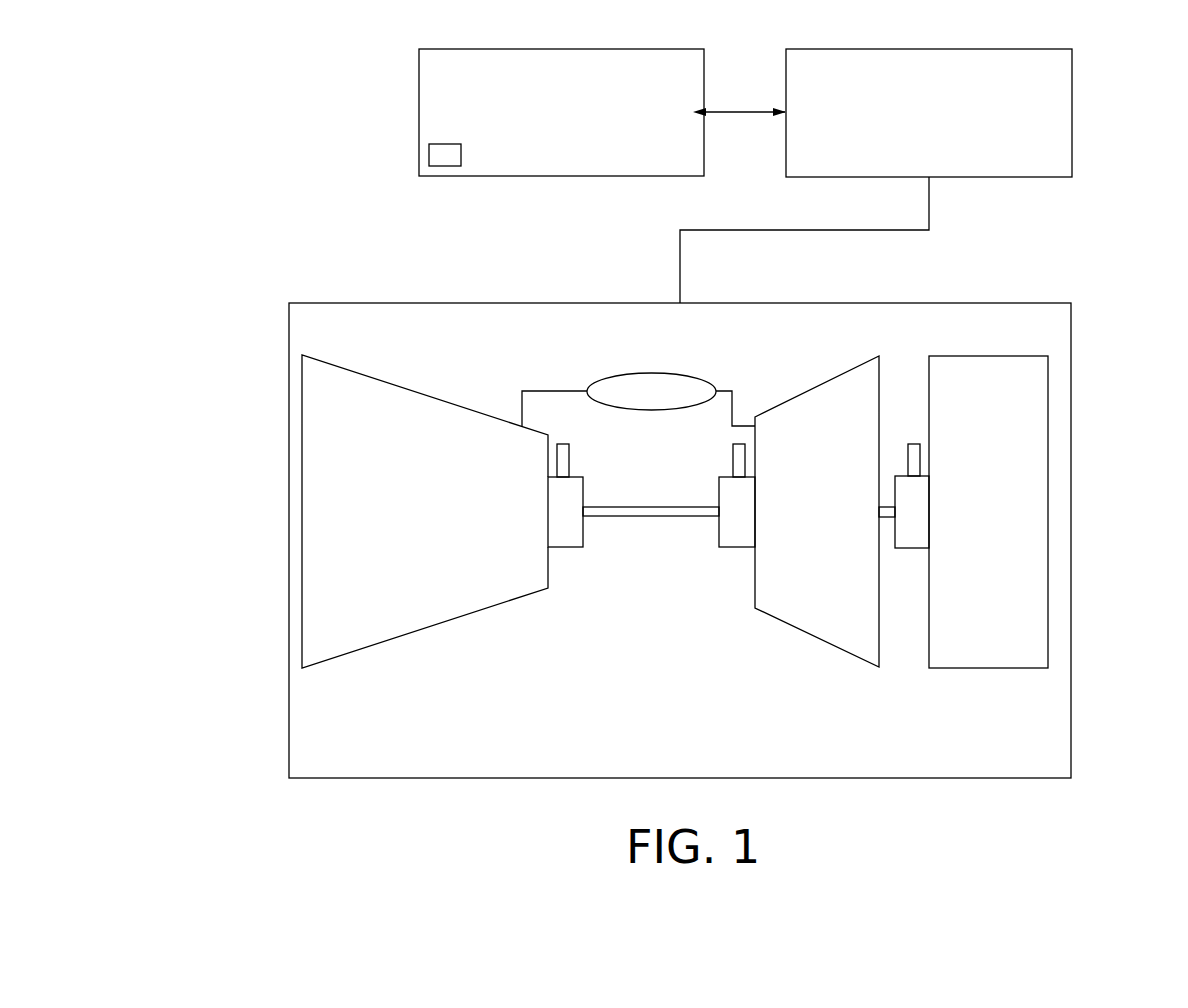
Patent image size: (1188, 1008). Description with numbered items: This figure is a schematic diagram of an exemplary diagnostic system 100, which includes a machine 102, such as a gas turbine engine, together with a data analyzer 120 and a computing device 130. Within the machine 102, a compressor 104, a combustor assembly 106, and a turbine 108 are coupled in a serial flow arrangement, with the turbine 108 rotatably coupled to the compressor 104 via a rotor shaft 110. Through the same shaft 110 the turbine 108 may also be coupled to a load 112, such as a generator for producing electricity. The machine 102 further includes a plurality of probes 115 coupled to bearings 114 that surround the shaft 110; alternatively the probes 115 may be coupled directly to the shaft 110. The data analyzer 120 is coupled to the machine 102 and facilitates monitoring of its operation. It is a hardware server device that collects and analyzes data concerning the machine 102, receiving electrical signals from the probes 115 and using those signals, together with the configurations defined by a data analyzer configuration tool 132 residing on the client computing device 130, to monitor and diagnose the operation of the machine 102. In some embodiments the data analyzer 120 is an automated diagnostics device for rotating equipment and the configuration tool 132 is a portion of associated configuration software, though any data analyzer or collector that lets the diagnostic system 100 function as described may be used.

The diagnostic system 100 is at (203, 225).
The machine 102 is at (1088, 448).
The compressor 104 is at (433, 628).
The combustor assembly 106 is at (655, 412).
The turbine 108 is at (815, 640).
The rotor shaft 110 is at (674, 520).
The load 112 is at (986, 670).
The bearings 114 is at (566, 550).
The probes 115 is at (569, 449).
The data analyzer 120 is at (951, 124).
The computing device 130 is at (584, 124).
The data analyzer configuration tool 132 is at (442, 157).